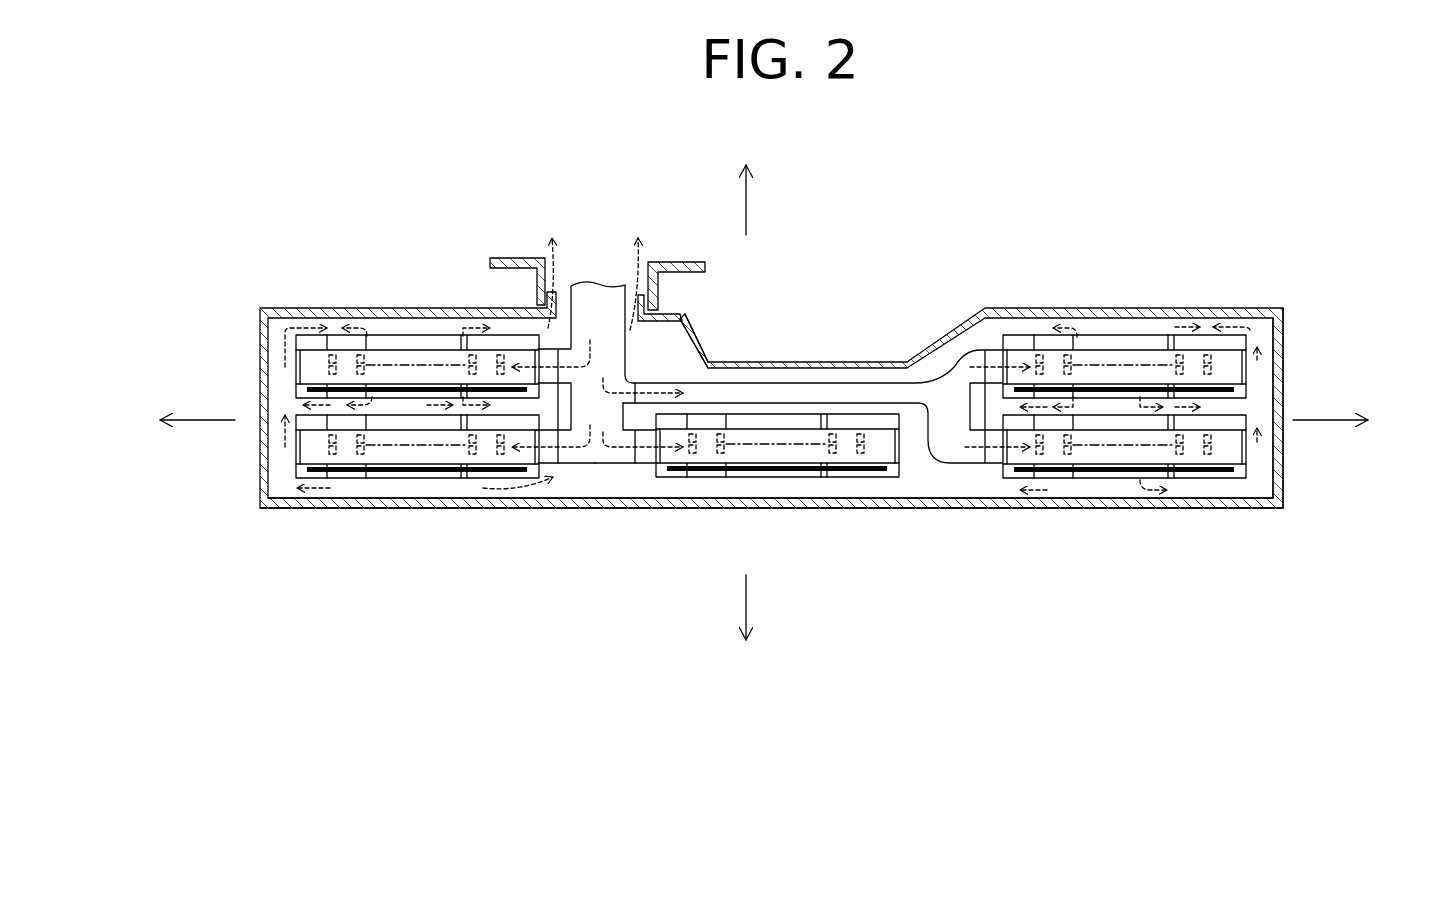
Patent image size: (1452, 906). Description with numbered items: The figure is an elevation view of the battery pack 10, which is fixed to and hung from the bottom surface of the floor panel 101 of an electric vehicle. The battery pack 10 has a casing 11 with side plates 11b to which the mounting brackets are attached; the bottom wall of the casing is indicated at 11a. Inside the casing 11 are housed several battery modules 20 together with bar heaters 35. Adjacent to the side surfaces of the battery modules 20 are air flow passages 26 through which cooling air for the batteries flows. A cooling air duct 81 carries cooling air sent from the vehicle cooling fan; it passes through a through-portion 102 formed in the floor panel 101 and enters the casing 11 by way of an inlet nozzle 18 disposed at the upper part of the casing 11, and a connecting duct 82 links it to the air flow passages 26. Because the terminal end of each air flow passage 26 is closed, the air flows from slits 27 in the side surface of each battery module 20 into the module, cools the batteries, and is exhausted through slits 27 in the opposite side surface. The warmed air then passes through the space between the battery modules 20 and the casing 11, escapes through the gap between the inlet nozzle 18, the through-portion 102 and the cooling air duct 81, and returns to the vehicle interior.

The battery pack 10 is at (890, 250).
The casing 11 is at (1074, 308).
The bottom wall of housing 11a is at (950, 508).
The side plate 11b is at (1285, 445).
The inlet nozzle 18 is at (640, 330).
The battery module 20 is at (405, 335).
The air flow passage 26 is at (1250, 375).
The slit 27 is at (330, 340).
The bar heater 35 is at (1235, 403).
The cooling air duct 81 is at (630, 362).
The connecting duct 82 is at (643, 480).
The floor panel 101 is at (690, 262).
The through-portion 102 is at (643, 290).